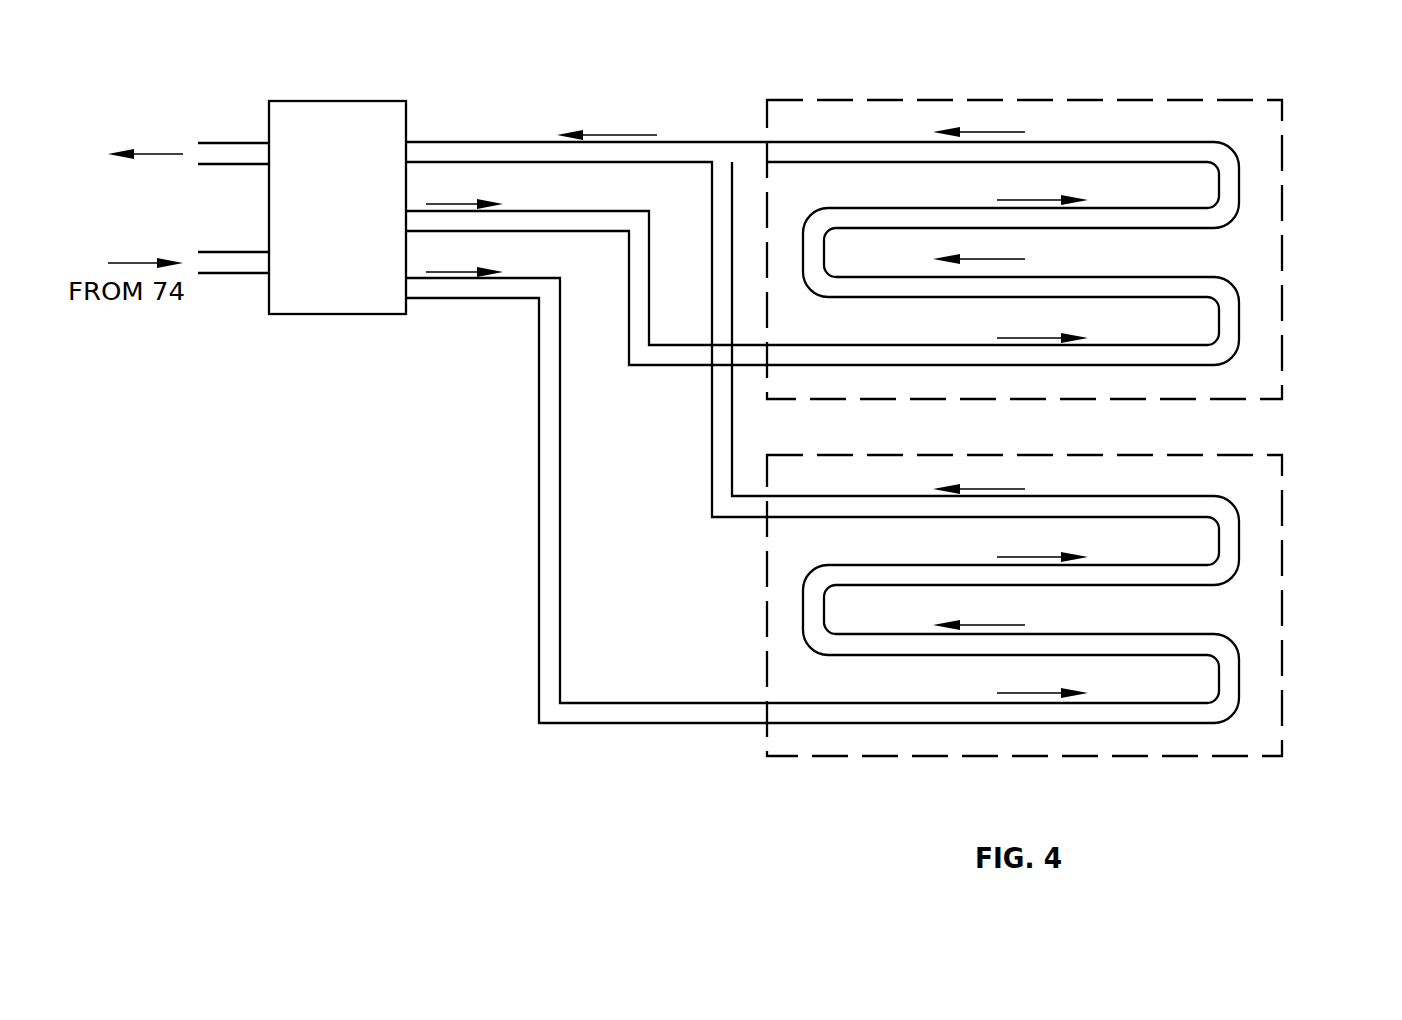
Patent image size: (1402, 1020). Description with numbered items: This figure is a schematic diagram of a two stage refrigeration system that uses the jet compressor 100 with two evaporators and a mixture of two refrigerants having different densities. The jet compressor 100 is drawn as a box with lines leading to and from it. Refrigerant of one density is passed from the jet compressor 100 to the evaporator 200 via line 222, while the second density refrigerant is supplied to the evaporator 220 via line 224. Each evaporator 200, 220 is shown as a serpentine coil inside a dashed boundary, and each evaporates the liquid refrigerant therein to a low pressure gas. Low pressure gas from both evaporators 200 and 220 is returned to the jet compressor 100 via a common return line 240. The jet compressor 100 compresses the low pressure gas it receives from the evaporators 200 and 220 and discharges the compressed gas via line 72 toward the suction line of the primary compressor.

The line 72 is at (212, 143).
The jet compressor 100 is at (318, 101).
The return line 240 is at (463, 143).
The line 222 is at (597, 211).
The line 224 is at (560, 600).
The evaporator 200 is at (1282, 180).
The evaporator 220 is at (1282, 535).